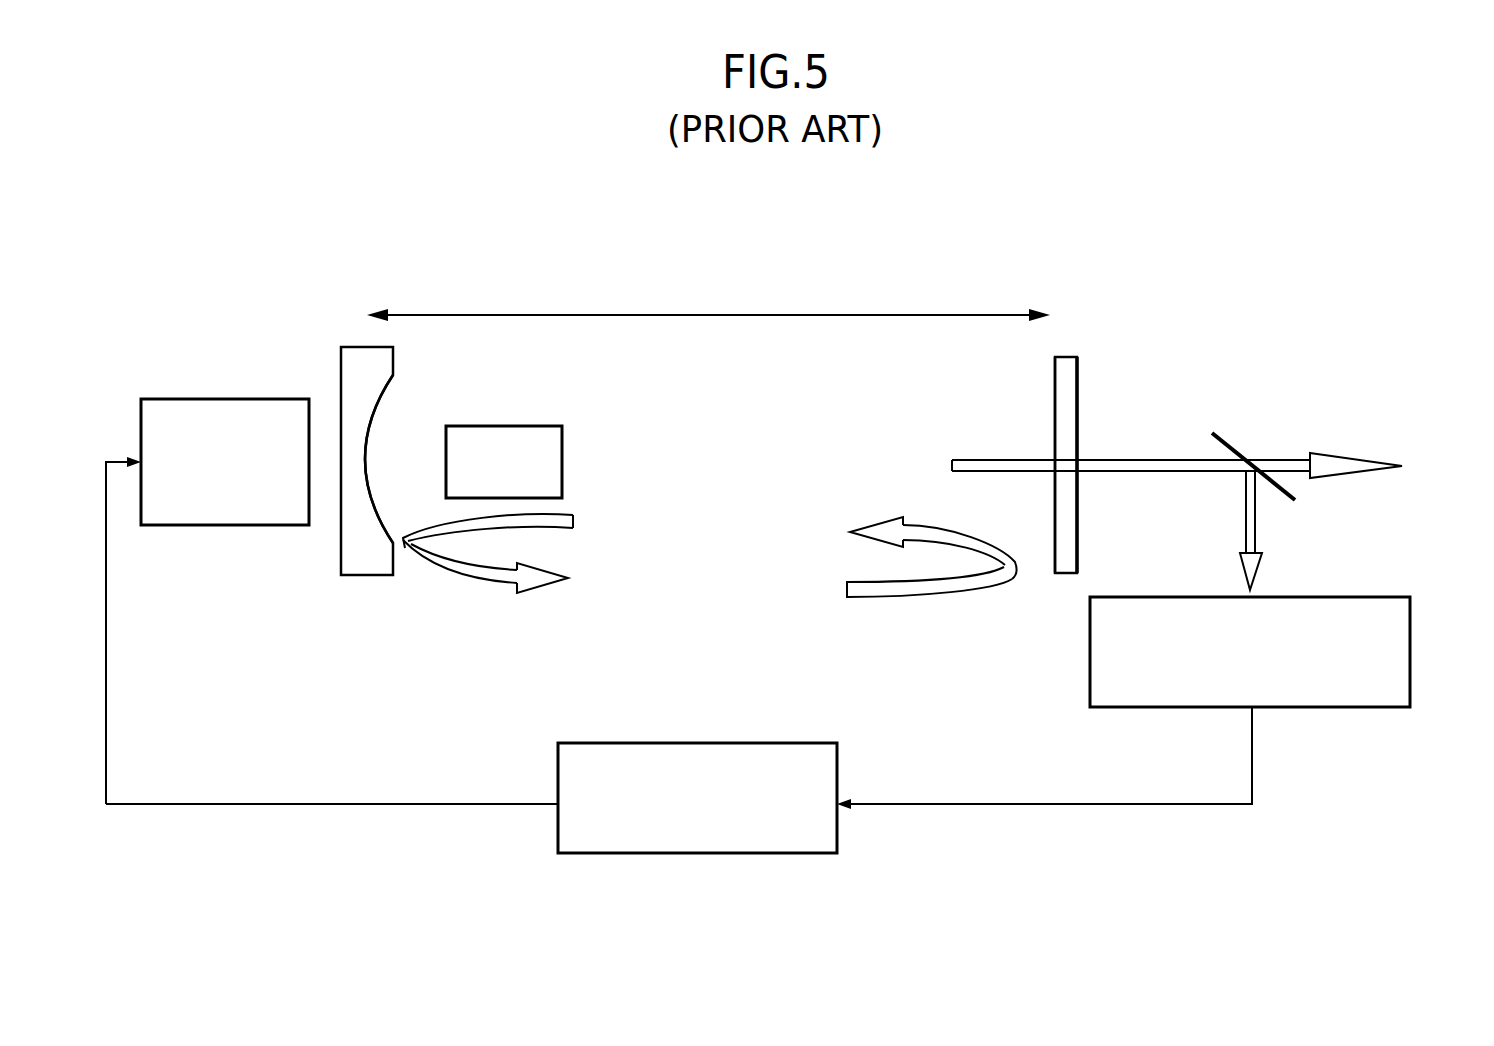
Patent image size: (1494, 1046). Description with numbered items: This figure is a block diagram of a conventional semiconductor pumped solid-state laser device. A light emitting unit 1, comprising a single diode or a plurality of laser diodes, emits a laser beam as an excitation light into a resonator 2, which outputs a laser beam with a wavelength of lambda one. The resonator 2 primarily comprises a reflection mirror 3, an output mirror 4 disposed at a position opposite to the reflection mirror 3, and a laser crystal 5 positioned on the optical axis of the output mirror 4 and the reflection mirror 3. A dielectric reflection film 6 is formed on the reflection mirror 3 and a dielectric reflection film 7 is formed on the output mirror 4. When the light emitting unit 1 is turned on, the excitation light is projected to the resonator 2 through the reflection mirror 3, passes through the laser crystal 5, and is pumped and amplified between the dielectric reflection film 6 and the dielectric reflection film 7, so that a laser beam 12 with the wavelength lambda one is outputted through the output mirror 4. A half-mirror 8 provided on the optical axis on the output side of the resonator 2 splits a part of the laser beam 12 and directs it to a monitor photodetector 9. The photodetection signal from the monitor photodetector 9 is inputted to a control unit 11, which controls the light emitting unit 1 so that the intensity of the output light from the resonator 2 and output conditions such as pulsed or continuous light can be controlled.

The light emitting unit 1 is at (190, 398).
The resonator 2 is at (857, 306).
The reflection mirror 3 is at (353, 346).
The output mirror 4 is at (1068, 357).
The laser crystal 5 is at (562, 458).
The dielectric reflection film 6 is at (394, 392).
The dielectric reflection film 7 is at (1055, 398).
The half-mirror 8 is at (1232, 447).
The monitor photodetector 9 is at (1410, 655).
The control unit 11 is at (695, 743).
The laser beam 12 is at (1122, 460).